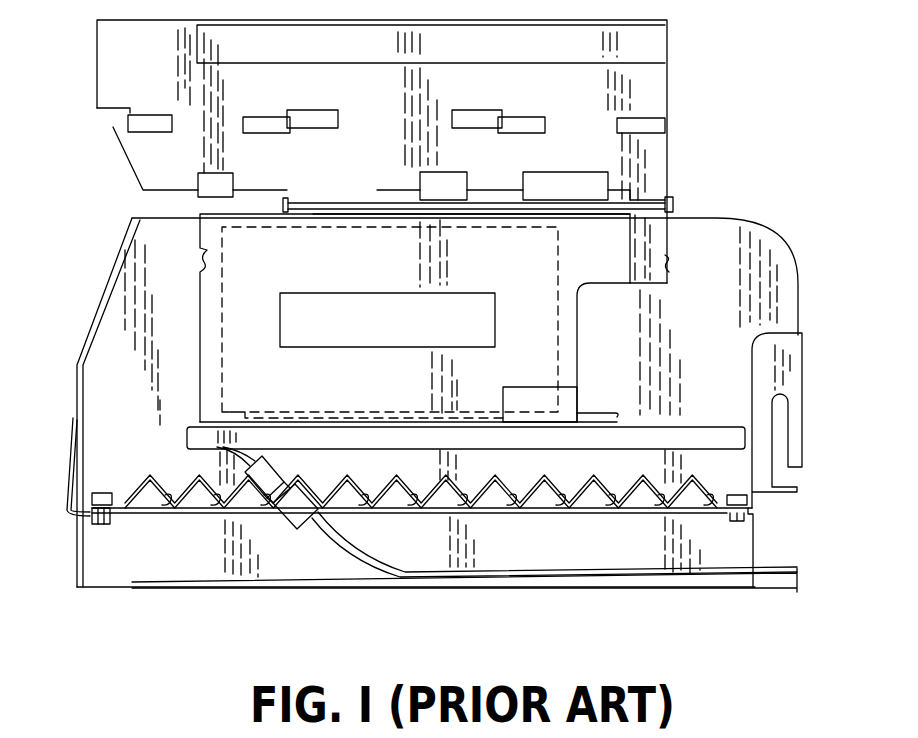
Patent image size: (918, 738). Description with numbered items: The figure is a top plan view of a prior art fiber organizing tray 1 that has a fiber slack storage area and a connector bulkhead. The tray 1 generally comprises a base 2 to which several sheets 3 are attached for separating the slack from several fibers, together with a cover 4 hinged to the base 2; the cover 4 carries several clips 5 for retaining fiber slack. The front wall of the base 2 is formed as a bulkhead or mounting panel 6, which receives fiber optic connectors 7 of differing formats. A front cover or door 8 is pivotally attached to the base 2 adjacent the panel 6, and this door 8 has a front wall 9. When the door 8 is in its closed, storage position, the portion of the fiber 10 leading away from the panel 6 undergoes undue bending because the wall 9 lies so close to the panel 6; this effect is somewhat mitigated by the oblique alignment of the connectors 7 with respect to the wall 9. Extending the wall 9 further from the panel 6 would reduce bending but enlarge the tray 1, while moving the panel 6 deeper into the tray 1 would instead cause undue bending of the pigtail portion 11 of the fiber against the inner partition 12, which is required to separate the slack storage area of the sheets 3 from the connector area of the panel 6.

The tray 1 is at (102, 228).
The base 2 is at (763, 243).
The sheets 3 is at (577, 340).
The cover 4 is at (667, 87).
The clips 5 is at (173, 122).
The bulkhead or mounting panel 6 is at (471, 512).
The fiber optic connectors 7 is at (286, 522).
The front cover or door 8 is at (727, 592).
The front wall 9 is at (103, 590).
The fiber 10 is at (415, 580).
The pigtail portion 11 is at (236, 468).
The inner partition 12 is at (187, 440).